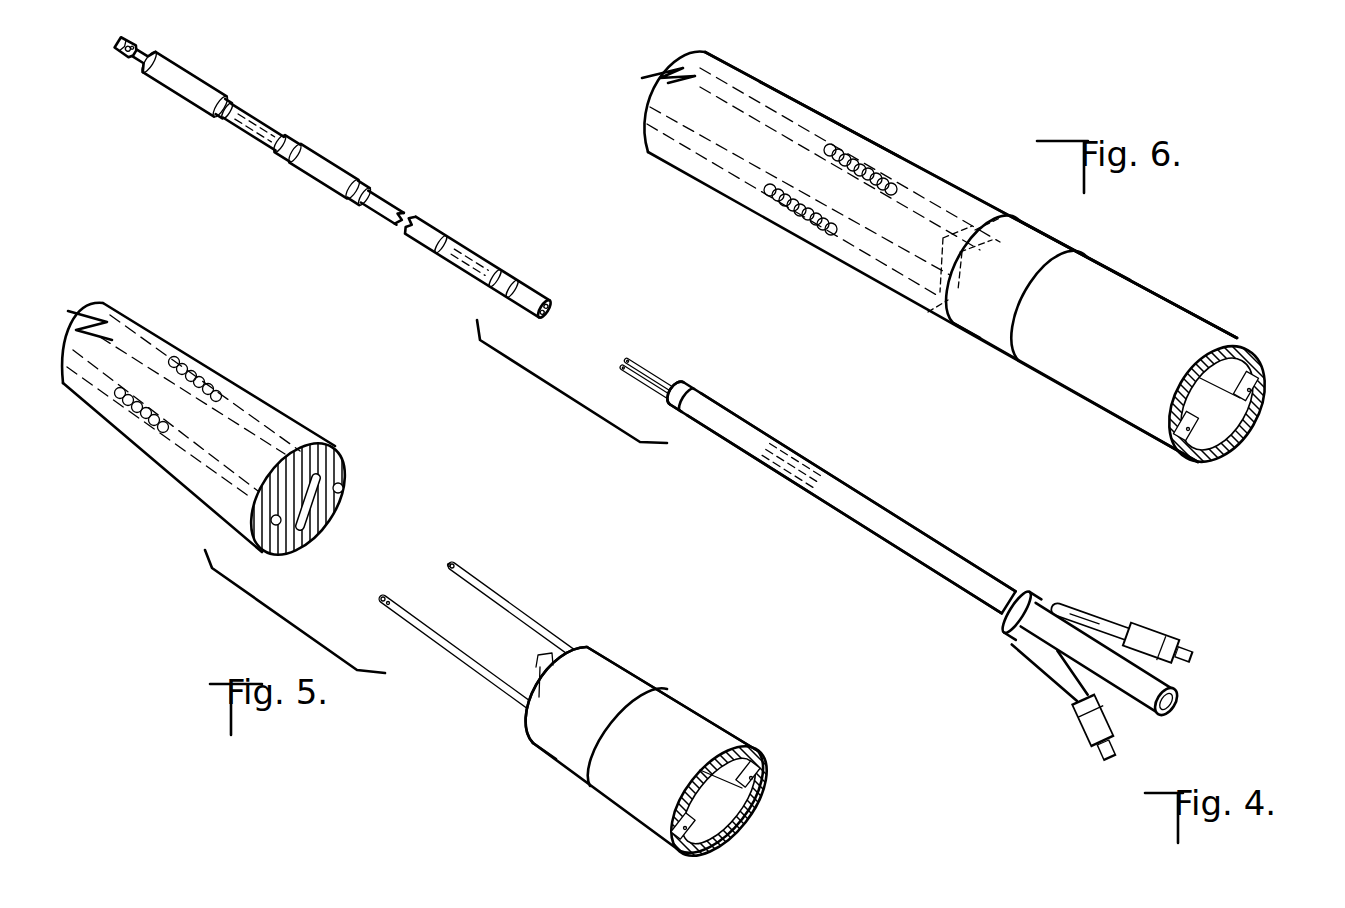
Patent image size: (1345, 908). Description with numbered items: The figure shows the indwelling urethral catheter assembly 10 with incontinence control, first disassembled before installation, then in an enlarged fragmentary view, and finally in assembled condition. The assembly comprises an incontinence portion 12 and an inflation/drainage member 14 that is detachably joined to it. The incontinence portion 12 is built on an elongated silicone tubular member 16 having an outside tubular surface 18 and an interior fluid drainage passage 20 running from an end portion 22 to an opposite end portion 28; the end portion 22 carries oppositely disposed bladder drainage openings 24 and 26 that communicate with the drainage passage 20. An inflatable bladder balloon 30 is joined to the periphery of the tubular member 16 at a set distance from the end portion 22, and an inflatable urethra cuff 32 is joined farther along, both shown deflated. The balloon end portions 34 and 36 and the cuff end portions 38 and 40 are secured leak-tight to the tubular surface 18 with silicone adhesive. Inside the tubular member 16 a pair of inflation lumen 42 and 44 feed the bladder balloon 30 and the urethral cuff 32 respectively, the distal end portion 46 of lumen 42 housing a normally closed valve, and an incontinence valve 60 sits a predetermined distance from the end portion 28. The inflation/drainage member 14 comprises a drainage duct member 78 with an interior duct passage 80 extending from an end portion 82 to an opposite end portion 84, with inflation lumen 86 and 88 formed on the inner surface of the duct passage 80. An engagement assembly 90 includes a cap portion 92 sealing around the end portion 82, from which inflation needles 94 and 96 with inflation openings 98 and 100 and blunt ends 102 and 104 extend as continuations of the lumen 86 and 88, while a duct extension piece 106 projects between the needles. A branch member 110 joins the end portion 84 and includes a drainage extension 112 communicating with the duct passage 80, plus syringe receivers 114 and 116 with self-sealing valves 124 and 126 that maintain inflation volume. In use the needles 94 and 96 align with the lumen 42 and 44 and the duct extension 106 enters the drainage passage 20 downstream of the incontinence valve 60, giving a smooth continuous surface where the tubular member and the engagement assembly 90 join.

In FIG. 5, the catheter assembly 10 is at (557, 391).
In FIG. 5, the incontinence portion 12 is at (425, 178).
In FIG. 6, the incontinence portion 12 is at (632, 145).
In FIG. 5, the inflation/drainage member 14 is at (559, 577).
In FIG. 6, the inflation/drainage member 14 is at (1091, 414).
In FIG. 4, the inflation/drainage member 14 is at (885, 464).
In FIG. 5, the elongated tubular member 16 is at (276, 125).
In FIG. 6, the elongated tubular member 16 is at (770, 36).
In FIG. 5, the outside tubular surface 18 is at (433, 230).
In FIG. 6, the outside tubular surface 18 is at (782, 81).
In FIG. 5, the interior fluid drainage passage 20 is at (247, 138).
In FIG. 6, the interior fluid drainage passage 20 is at (647, 103).
In FIG. 5, the end portion 22 is at (118, 47).
In FIG. 5, the bladder drainage opening 24 is at (126, 58).
In FIG. 5, the bladder drainage opening 26 is at (140, 44).
In FIG. 5, the opposite end portion 28 is at (550, 297).
In FIG. 6, the opposite end portion 28 is at (932, 316).
In FIG. 5, the inflatable bladder balloon 30 is at (219, 90).
In FIG. 5, the inflatable urethra cuff 32 is at (350, 172).
In FIG. 5, the end portion of the bladder balloon 34 is at (152, 56).
In FIG. 5, the end portion of the bladder balloon 36 is at (233, 99).
In FIG. 5, the end portion of the urethral cuff 38 is at (288, 165).
In FIG. 5, the end portion of the urethral cuff 40 is at (365, 212).
In FIG. 5, the inflation lumen 42 is at (93, 384).
In FIG. 6, the inflation lumen 42 is at (740, 175).
In FIG. 5, the inflation lumen 44 is at (128, 317).
In FIG. 6, the inflation lumen 44 is at (797, 120).
In FIG. 6, the distal end portion of the inflation lumen 46 is at (993, 204).
In FIG. 5, the incontinence valve 60 is at (517, 249).
In FIG. 5, the drainage duct member 78 is at (730, 724).
In FIG. 6, the drainage duct member 78 is at (1202, 318).
In FIG. 4, the drainage duct member 78 is at (947, 501).
In FIG. 5, the interior duct passage 80 is at (728, 823).
In FIG. 6, the interior duct passage 80 is at (1234, 423).
In FIG. 4, the interior duct passage 80 is at (780, 473).
In FIG. 5, the end portion of the drainage duct member 82 is at (668, 690).
In FIG. 6, the end portion of the drainage duct member 82 is at (1088, 258).
In FIG. 4, the end portion of the drainage duct member 82 is at (684, 378).
In FIG. 4, the opposite end portion of the drainage duct member 84 is at (1013, 588).
In FIG. 5, the inflation lumen 86 is at (672, 838).
In FIG. 6, the inflation lumen 86 is at (1173, 431).
In FIG. 5, the inflation lumen 88 is at (763, 790).
In FIG. 6, the inflation lumen 88 is at (1256, 386).
In FIG. 5, the engagement assembly 90 is at (534, 755).
In FIG. 6, the engagement assembly 90 is at (1032, 216).
In FIG. 4, the engagement assembly 90 is at (695, 381).
In FIG. 5, the cap portion 92 is at (630, 675).
In FIG. 6, the cap portion 92 is at (1053, 234).
In FIG. 4, the cap portion 92 is at (673, 408).
In FIG. 5, the inflation needle 94 is at (497, 691).
In FIG. 6, the inflation needle 94 is at (903, 293).
In FIG. 4, the inflation needle 94 is at (643, 379).
In FIG. 5, the inflation needle 96 is at (541, 622).
In FIG. 6, the inflation needle 96 is at (962, 184).
In FIG. 4, the inflation needle 96 is at (650, 366).
In FIG. 5, the inflation opening 98 is at (388, 606).
In FIG. 5, the inflation opening 100 is at (458, 567).
In FIG. 5, the blunt end 102 is at (378, 594).
In FIG. 5, the blunt end 104 is at (445, 562).
In FIG. 5, the duct extension piece 106 is at (533, 667).
In FIG. 4, the branch member 110 is at (1098, 618).
In FIG. 4, the drainage extension 112 is at (1155, 683).
In FIG. 4, the syringe receiver 114 is at (1060, 688).
In FIG. 4, the syringe receiver 116 is at (1117, 628).
In FIG. 4, the self-sealing valve 124 is at (1083, 740).
In FIG. 4, the self-sealing valve 126 is at (1181, 641).